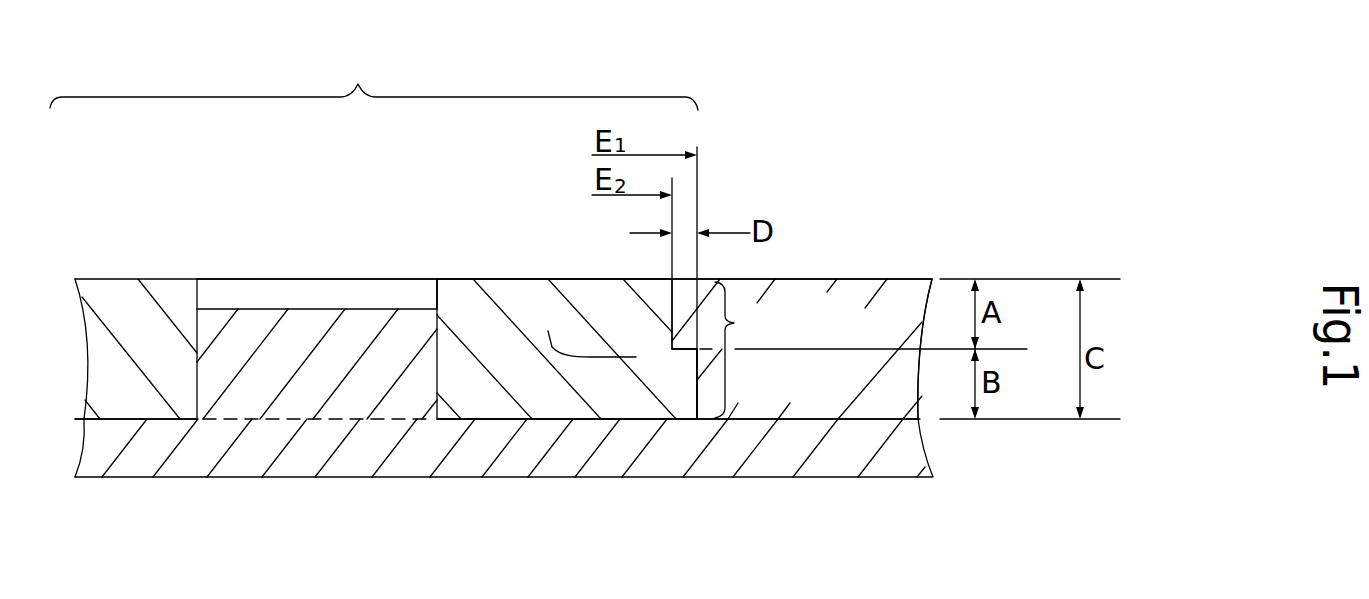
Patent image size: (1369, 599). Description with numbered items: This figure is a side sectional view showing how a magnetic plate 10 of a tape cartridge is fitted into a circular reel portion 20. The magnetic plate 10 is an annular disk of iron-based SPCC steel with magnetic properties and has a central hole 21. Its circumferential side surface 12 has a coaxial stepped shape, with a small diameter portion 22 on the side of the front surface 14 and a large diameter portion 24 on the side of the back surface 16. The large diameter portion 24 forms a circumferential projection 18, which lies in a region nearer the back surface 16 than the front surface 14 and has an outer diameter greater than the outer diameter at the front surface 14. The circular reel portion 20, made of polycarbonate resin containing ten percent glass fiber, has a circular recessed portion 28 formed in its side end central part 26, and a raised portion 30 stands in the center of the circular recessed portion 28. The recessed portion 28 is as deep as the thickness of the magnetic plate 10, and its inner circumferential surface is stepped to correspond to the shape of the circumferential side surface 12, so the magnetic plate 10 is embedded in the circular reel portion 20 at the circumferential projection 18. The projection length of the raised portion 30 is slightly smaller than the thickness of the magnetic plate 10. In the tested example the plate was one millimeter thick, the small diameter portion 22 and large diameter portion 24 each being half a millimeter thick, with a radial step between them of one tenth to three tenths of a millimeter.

The magnetic plate 10 is at (472, 262).
The circumferential side surface 12 is at (739, 350).
The front surface 14 is at (515, 279).
The back surface 16 is at (497, 419).
The circumferential projection 18 is at (682, 400).
The circular reel portion 20 is at (849, 300).
The central hole 21 is at (433, 293).
The small diameter portion 22 is at (780, 315).
The large diameter portion 24 is at (780, 381).
The side end central part 26 is at (374, 77).
The circular recessed portion 28 is at (586, 330).
The raised portion 30 is at (268, 309).